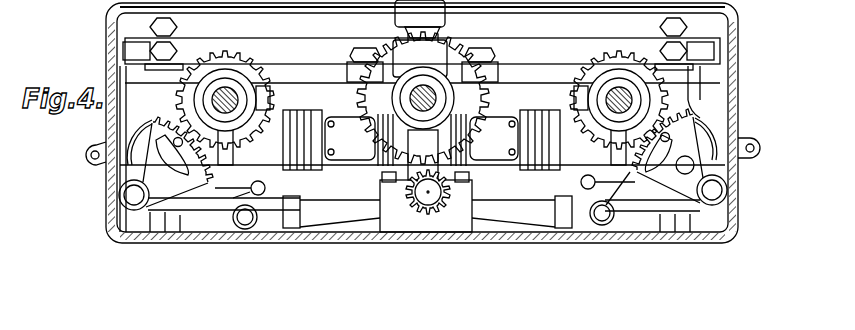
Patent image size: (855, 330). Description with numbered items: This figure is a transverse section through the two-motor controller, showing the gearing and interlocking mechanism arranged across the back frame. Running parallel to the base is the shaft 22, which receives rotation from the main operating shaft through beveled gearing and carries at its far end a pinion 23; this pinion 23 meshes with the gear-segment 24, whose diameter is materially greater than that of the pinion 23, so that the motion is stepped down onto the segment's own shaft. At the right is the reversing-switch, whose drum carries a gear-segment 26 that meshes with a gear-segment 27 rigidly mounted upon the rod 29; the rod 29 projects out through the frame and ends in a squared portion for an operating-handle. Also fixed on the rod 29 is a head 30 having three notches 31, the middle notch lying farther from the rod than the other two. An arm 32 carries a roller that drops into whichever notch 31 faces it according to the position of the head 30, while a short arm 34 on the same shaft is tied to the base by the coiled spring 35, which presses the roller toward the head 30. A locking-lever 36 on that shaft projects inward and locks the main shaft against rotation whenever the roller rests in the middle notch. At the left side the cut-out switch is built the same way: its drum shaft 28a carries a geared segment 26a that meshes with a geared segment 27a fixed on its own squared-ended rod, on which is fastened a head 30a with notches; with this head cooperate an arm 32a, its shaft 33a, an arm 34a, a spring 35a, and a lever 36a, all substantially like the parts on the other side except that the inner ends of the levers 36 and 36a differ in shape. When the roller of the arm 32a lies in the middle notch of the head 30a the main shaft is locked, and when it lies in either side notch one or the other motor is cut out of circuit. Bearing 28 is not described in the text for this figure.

The shaft 22 is at (440, 204).
The pinion 23 is at (412, 230).
The gear-segment 24 is at (475, 100).
The gear-segment 26 is at (590, 128).
The geared segment 26a is at (225, 100).
The gear-segment 27 is at (692, 107).
The geared segment 27a is at (187, 262).
The right bearing 28 is at (578, 96).
The shaft 28a is at (236, 94).
The rod 29 is at (423, 159).
The head 30 is at (127, 239).
The head 30a is at (140, 174).
The notches 31 is at (424, 148).
The arm 32 is at (633, 232).
The arm 32a is at (231, 242).
The shaft 33a is at (298, 230).
The short arm 34 is at (570, 198).
The arm 34a is at (302, 200).
The coiled spring 35 is at (691, 235).
The spring 35a is at (163, 242).
The locking-lever 36 is at (504, 209).
The lever 36a is at (317, 210).